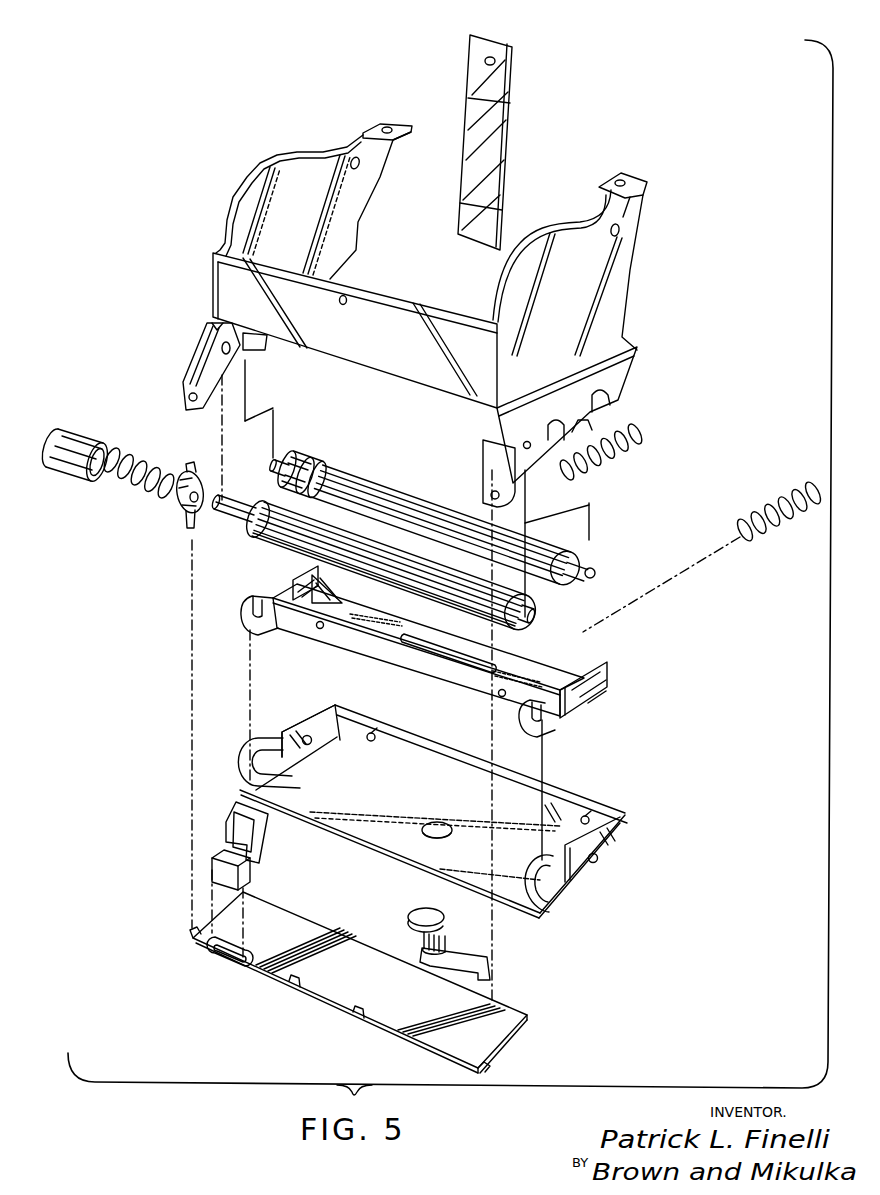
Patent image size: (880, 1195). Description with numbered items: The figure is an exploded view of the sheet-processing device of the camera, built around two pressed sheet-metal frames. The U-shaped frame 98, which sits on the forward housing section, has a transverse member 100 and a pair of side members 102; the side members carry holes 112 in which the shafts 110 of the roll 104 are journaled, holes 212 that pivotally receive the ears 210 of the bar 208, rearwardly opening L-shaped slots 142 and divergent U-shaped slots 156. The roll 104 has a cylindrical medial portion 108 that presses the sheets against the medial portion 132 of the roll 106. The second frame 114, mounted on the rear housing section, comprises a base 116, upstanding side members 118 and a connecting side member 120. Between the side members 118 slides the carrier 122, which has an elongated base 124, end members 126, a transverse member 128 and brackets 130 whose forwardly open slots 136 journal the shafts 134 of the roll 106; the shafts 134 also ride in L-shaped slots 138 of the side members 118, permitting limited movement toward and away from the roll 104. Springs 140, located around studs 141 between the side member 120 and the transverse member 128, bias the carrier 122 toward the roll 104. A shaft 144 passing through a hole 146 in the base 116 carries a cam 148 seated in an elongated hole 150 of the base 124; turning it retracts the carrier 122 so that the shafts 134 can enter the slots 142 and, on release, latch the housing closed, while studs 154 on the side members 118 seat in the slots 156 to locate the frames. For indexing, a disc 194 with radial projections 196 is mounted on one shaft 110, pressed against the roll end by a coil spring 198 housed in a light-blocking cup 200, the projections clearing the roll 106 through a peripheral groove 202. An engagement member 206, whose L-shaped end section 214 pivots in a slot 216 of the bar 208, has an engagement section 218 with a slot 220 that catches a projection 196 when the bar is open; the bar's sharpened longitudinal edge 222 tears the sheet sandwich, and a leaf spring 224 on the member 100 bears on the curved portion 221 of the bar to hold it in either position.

The U-shaped frame 98 is at (220, 211).
The transverse member 100 is at (389, 354).
The side members 102 is at (300, 234).
The roll 104 is at (278, 533).
The roll 106 is at (352, 458).
The medial portion 108 is at (422, 577).
The shafts 110 is at (220, 510).
The holes 112 is at (232, 349).
The frame 114 is at (589, 897).
The base 116 is at (471, 822).
The side members 118 is at (318, 730).
The side member 120 is at (462, 760).
The carrier 122 is at (417, 664).
The base 124 is at (550, 663).
The end members 126 is at (317, 593).
The transverse member 128 is at (407, 660).
The brackets 130 is at (250, 630).
The medial portion 132 is at (360, 497).
The shafts 134 is at (272, 468).
The slots 136 is at (251, 605).
The L-shaped slots 138 is at (272, 765).
The springs 140 is at (607, 463).
The studs 141 is at (375, 742).
The L-shaped slots 142 is at (212, 336).
The shaft 144 is at (452, 942).
The hole 146 is at (440, 820).
The cam 148 is at (420, 918).
The elongated hole 150 is at (428, 645).
The studs 154 is at (309, 744).
The U-shaped slots 156 is at (610, 403).
The disc 194 is at (183, 507).
The radial projections 196 is at (192, 463).
The coil spring 198 is at (123, 457).
The cup 200 is at (72, 473).
The peripheral groove 202 is at (317, 460).
The engagement member 206 is at (247, 851).
The bar 208 is at (335, 982).
The ears 210 is at (190, 933).
The holes 212 is at (198, 397).
The L-shaped end section 214 is at (243, 875).
The slot 216 is at (230, 955).
The engagement section 218 is at (237, 805).
The slot 220 is at (258, 832).
The curved portion 221 is at (320, 1002).
The longitudinal edge 222 is at (357, 947).
The leaf spring 224 is at (497, 138).